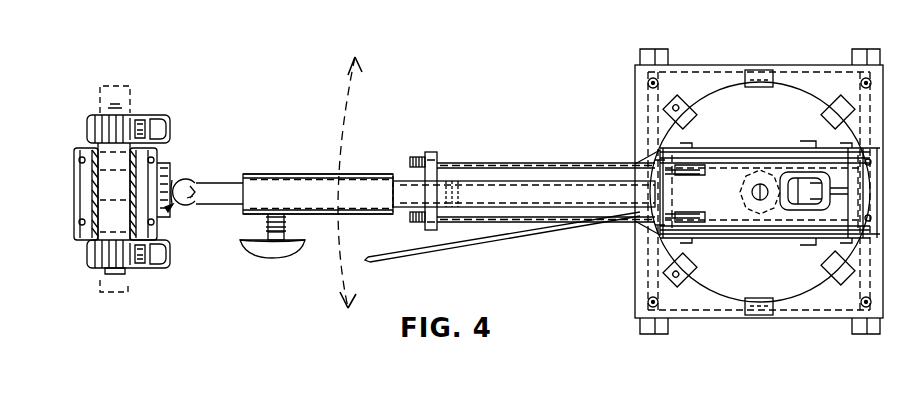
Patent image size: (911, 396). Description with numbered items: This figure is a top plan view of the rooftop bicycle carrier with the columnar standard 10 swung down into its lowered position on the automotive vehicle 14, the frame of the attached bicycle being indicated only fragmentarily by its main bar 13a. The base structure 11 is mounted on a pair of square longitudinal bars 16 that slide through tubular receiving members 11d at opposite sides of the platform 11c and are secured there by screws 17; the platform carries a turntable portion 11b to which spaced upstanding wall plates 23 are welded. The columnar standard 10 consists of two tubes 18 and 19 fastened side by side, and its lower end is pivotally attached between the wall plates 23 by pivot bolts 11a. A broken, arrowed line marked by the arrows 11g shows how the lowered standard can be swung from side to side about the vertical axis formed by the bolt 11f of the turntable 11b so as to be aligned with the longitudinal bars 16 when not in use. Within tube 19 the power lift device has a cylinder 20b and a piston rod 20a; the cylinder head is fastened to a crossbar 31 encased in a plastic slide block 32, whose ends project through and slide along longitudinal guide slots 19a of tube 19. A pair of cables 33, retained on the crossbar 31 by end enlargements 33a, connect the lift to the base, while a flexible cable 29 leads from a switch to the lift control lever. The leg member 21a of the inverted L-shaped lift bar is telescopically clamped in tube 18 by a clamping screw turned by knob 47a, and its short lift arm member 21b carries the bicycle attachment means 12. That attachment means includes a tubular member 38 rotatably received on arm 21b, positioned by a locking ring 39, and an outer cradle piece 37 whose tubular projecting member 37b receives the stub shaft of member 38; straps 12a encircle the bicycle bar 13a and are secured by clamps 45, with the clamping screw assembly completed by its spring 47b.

The columnar standard 10 is at (366, 154).
The base structure 11 is at (788, 329).
The pivot bolts 11a is at (812, 248).
The turntable portion 11b is at (718, 300).
The platform 11c is at (712, 72).
The tubular receiving members 11d is at (648, 107).
The bolt 11f is at (760, 178).
The arrows 11g is at (345, 100).
The bicycle attachment means 12 is at (188, 100).
The straps 12a is at (90, 130).
The main bar 13a is at (115, 84).
The automotive vehicle 14 is at (74, 192).
The longitudinal bars 16 is at (645, 52).
The screws 17 is at (648, 83).
The structural tube 18 is at (308, 174).
The structural tube 19 is at (566, 178).
The longitudinal guide slots 19a is at (310, 215).
The piston rod 20a is at (790, 205).
The cylinder 20b is at (472, 183).
The leg member 21a is at (236, 188).
The lift arm member 21b is at (200, 216).
The upstanding wall plates 23 is at (775, 152).
The flexible cable 29 is at (388, 262).
The crossbar 31 is at (432, 155).
The slide block 32 is at (402, 171).
The cables 33 is at (505, 165).
The end enlargements 33a is at (420, 157).
The outer cradle piece 37 is at (72, 208).
The tubular projecting member 37b is at (178, 218).
The tubular member 38 is at (176, 180).
The locking ring 39 is at (903, 93).
The clamps 45 is at (160, 113).
The knob 47a is at (268, 258).
The jack spring 47b is at (258, 248).